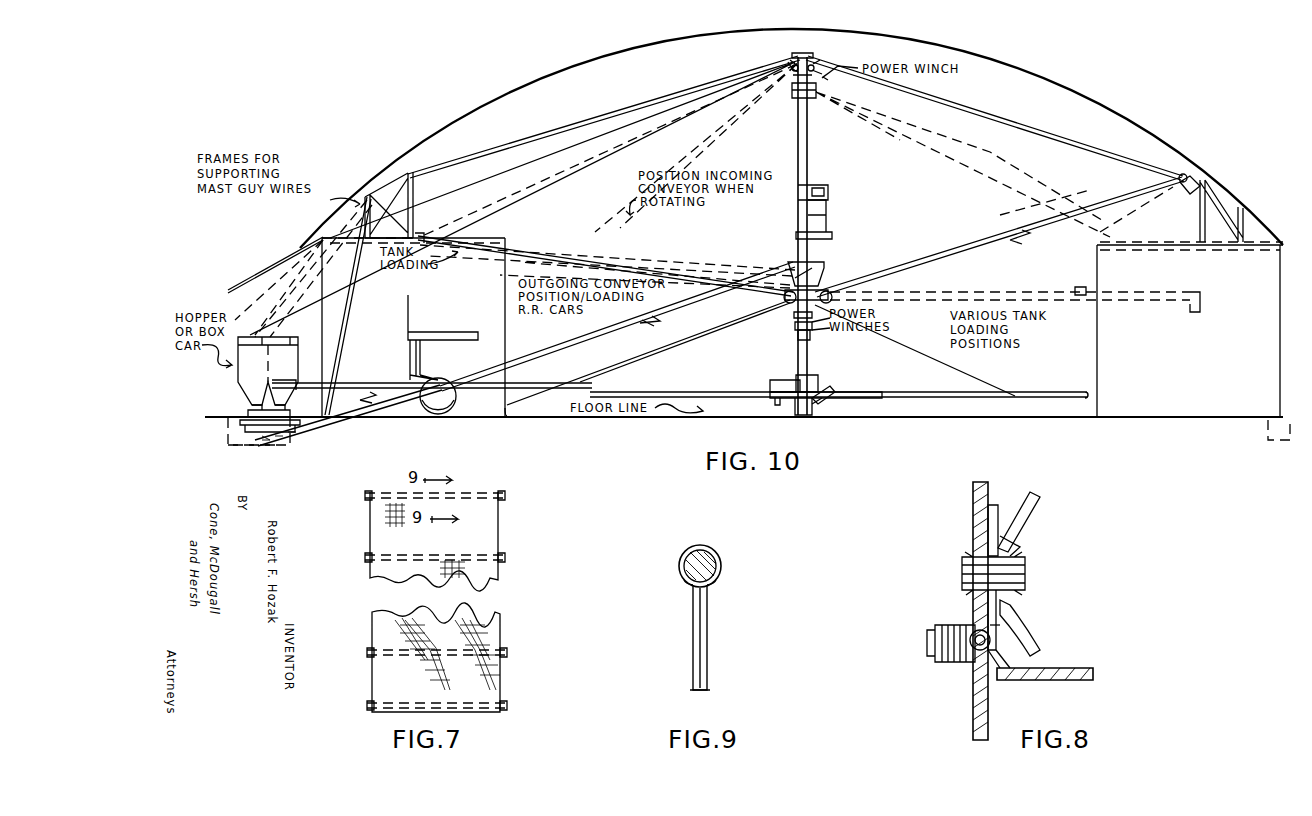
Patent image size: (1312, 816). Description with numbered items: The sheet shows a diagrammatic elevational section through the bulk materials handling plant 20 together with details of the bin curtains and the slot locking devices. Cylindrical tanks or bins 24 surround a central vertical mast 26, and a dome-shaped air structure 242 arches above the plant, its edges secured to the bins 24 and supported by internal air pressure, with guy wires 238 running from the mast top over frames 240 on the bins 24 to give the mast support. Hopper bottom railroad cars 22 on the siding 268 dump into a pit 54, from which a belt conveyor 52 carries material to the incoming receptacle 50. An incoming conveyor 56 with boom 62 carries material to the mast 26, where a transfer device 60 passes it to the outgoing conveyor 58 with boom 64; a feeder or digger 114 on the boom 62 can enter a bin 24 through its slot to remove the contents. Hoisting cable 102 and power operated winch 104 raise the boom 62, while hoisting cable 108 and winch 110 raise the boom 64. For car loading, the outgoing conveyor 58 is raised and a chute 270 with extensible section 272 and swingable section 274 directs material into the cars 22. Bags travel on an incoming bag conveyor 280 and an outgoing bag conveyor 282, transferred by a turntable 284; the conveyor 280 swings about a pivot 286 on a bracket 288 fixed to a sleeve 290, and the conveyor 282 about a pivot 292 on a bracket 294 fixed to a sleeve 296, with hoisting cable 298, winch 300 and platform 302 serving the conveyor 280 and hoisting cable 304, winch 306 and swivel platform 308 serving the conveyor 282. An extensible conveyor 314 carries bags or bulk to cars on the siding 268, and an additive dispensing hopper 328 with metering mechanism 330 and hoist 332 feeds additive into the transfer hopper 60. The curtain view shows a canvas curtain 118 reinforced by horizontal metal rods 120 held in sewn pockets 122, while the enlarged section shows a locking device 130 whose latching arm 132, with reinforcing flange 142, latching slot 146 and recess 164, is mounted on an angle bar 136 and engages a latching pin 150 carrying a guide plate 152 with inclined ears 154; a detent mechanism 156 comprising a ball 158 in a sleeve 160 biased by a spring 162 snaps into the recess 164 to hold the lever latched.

In FIG. 10, the bulk materials handling plant 20 is at (280, 82).
In FIG. 10, the railroad cars 22 is at (237, 383).
In FIG. 10, the tanks or bins 24 is at (512, 410).
In FIG. 10, the central vertical mast 26 is at (807, 136).
In FIG. 10, the incoming receptacle 50 is at (458, 397).
In FIG. 10, the conveyor 52 is at (333, 426).
In FIG. 10, the pit 54 is at (265, 447).
In FIG. 10, the incoming conveyor 56 is at (629, 332).
In FIG. 10, the outgoing conveyor 58 is at (720, 245).
In FIG. 10, the transfer device (transfer hopper) 60 is at (822, 268).
In FIG. 10, the boom 62 is at (574, 356).
In FIG. 10, the boom 64 is at (1094, 206).
In FIG. 10, the hoisting cable 102 is at (724, 148).
In FIG. 10, the power operated winch 104 is at (792, 60).
In FIG. 10, the hoisting cable 108 is at (960, 158).
In FIG. 10, the power operated winch 110 is at (818, 90).
In FIG. 10, the feeder or digger 114 is at (447, 372).
In FIG. 7, the curtains 118 is at (508, 560).
In FIG. 9, the curtains 118 is at (708, 640).
In FIG. 7, the horizontal metal rods 120 is at (500, 493).
In FIG. 9, the horizontal metal rods 120 is at (722, 565).
In FIG. 9, the pockets 122 is at (687, 569).
In FIG. 8, the automatic locking devices (locking levers) 130 is at (996, 688).
In FIG. 8, the latching arm 132 is at (1000, 602).
In FIG. 8, the rigid angle bar 136 is at (972, 500).
In FIG. 8, the reinforcing flange or rib 142 is at (1068, 680).
In FIG. 8, the latching slot 146 is at (996, 520).
In FIG. 8, the latching pin 150 is at (1028, 566).
In FIG. 8, the guide plate 152 is at (1022, 547).
In FIG. 8, the outwardly inclined ears 154 is at (1040, 497).
In FIG. 8, the detent mechanism 156 is at (955, 672).
In FIG. 8, the ball 158 is at (972, 664).
In FIG. 8, the sleeve 160 is at (948, 624).
In FIG. 8, the spring 162 is at (950, 666).
In FIG. 8, the recess or opening 164 is at (998, 626).
In FIG. 10, the guy wires or cables 238 is at (652, 103).
In FIG. 10, the frames 240 is at (413, 205).
In FIG. 10, the air structure (dome-shaped membrane) 242 is at (492, 97).
In FIG. 10, the railroad siding or track 268 is at (226, 413).
In FIG. 10, the chute 270 is at (320, 242).
In FIG. 10, the extensible section 272 is at (330, 236).
In FIG. 10, the vertically swingable section 274 is at (280, 300).
In FIG. 10, the incoming bag conveyor 280 is at (690, 392).
In FIG. 10, the outgoing bag conveyor 282 is at (968, 402).
In FIG. 10, the transfer device (turntable) 284 is at (778, 405).
In FIG. 10, the pivot 286 is at (775, 394).
In FIG. 10, the bracket 288 is at (770, 384).
In FIG. 10, the sleeve 290 is at (818, 380).
In FIG. 10, the pivot 292 is at (828, 398).
In FIG. 10, the bracket 294 is at (818, 406).
In FIG. 10, the sleeve 296 is at (800, 412).
In FIG. 10, the hoisting cable 298 is at (738, 336).
In FIG. 10, the power operated winch 300 is at (790, 312).
In FIG. 10, the platform 302 is at (792, 324).
In FIG. 10, the hoisting cable 304 is at (955, 372).
In FIG. 10, the power operated winch 306 is at (818, 330).
In FIG. 10, the swivel platform 308 is at (792, 336).
In FIG. 10, the extensible conveyor 314 is at (380, 382).
In FIG. 10, the additive dispensing hopper 328 is at (1039, 209).
In FIG. 10, the metering mechanism 330 is at (830, 238).
In FIG. 10, the power operated hoist 332 is at (820, 182).